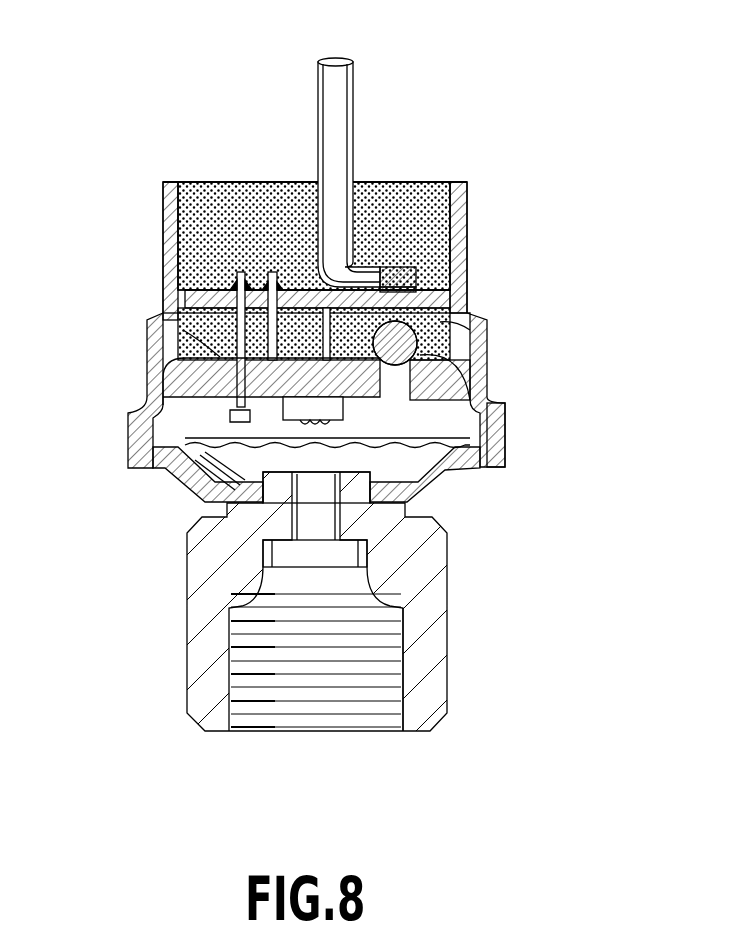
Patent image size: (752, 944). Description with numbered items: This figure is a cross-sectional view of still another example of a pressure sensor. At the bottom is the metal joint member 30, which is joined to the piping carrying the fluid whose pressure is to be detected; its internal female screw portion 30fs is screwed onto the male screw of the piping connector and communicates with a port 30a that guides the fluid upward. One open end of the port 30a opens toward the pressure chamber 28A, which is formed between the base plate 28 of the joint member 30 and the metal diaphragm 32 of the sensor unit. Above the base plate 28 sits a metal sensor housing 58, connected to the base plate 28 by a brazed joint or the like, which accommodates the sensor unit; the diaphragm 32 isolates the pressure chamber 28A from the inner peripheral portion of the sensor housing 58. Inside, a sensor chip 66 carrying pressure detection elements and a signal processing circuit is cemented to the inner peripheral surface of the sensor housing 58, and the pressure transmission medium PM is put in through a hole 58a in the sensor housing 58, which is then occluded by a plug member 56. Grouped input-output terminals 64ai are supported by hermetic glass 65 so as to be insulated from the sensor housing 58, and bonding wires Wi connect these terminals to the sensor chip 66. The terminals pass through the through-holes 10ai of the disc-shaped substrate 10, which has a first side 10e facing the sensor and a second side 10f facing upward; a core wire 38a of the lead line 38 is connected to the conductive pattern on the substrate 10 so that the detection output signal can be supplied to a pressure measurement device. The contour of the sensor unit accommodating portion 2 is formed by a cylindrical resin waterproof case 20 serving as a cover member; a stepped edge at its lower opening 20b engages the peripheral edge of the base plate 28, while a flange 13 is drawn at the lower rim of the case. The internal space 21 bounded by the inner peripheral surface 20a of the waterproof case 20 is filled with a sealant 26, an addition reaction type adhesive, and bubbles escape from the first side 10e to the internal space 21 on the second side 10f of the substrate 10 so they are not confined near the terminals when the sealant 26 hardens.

The sensor unit accommodating portion 2 is at (158, 205).
The substrate 10 is at (163, 292).
The through-holes 10ai is at (187, 285).
The first side of the substrate 10e is at (440, 296).
The second side of the substrate 10f is at (297, 288).
The flange 13 is at (505, 430).
The waterproof case 20 is at (470, 212).
The inner peripheral surface of the waterproof case 20a is at (446, 184).
The opening 20b is at (445, 483).
The internal space 21 is at (192, 178).
The sealant 26 is at (402, 210).
The base plate 28 is at (150, 470).
The pressure chamber 28A is at (200, 483).
The joint member 30 is at (447, 640).
The port 30a is at (326, 523).
The female screw portion 30fs is at (398, 705).
The diaphragm 32 is at (488, 458).
The lead line 38 is at (357, 72).
The core wire 38a is at (405, 278).
The plug member 56 is at (417, 340).
The sensor housing 58 is at (487, 365).
The hole 58a is at (487, 330).
The grouped input-output terminals 64ai is at (243, 272).
The hermetic glass 65 is at (160, 368).
The sensor chip 66 is at (200, 378).
The pressure transmission medium PM is at (470, 393).
The bonding wires Wi is at (200, 420).